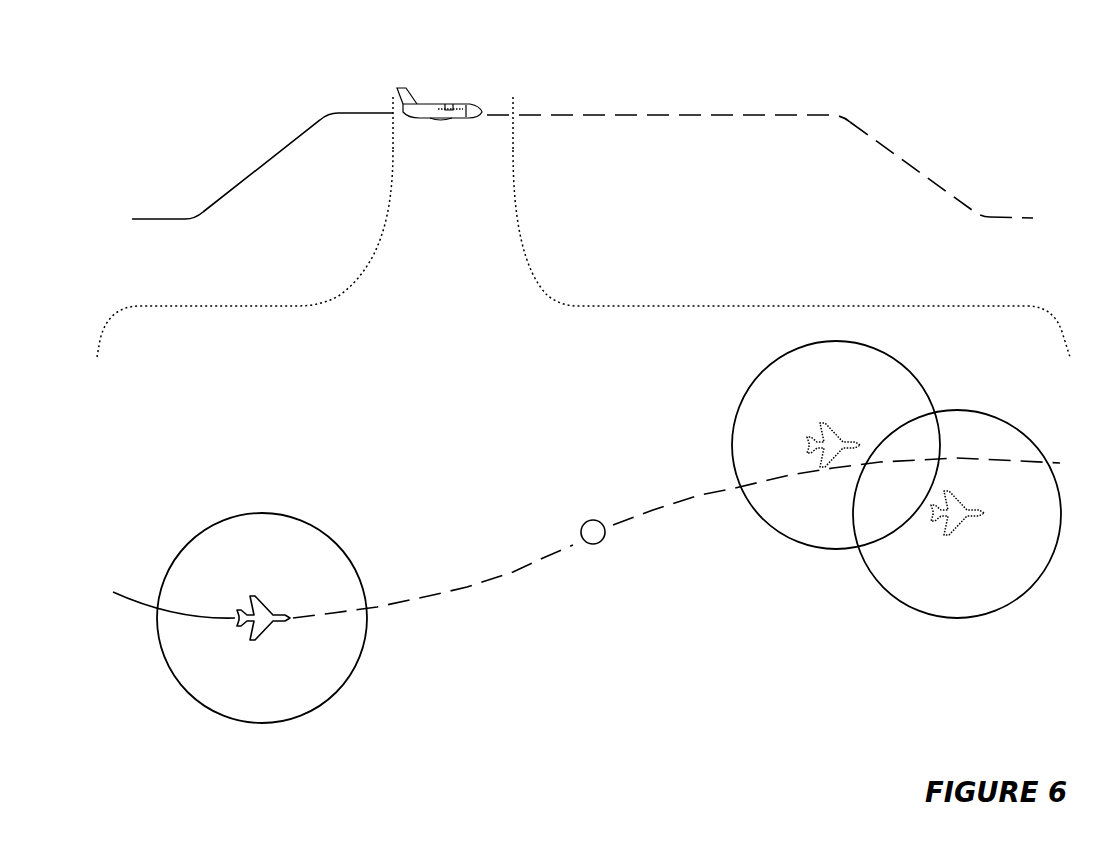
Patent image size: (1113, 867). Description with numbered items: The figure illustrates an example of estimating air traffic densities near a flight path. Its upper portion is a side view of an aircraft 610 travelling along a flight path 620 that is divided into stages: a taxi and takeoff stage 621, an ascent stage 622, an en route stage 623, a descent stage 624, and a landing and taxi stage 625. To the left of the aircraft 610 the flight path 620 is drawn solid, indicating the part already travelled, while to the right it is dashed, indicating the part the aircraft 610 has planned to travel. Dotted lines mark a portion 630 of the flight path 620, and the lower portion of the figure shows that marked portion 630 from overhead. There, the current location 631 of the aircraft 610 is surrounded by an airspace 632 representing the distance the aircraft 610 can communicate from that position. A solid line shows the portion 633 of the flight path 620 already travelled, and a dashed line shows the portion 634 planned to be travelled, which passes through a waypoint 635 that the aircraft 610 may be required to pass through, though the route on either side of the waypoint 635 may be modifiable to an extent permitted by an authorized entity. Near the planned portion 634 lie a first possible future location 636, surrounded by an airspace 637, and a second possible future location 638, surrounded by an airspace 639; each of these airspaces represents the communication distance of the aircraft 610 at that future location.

The aircraft 610 is at (453, 103).
The flight path 620 is at (837, 76).
The taxi and takeoff stage 621 is at (145, 218).
The ascent stage 622 is at (250, 165).
The en route stage 623 is at (726, 112).
The descent stage 624 is at (920, 165).
The landing and taxi stage 625 is at (1022, 215).
The marked portion of the flight path 630 is at (453, 137).
The current location of the aircraft 631 is at (262, 637).
The airspace surrounding the current location 632 is at (265, 512).
The portion of the flight path already travelled 633 is at (143, 592).
The portion of the flight path planned to travel 634 is at (422, 592).
The waypoint 635 is at (580, 530).
The first possible future location 636 is at (836, 430).
The airspace around the first possible future location 637 is at (832, 552).
The second possible future location 638 is at (963, 530).
The airspace around the second possible future location 639 is at (955, 620).